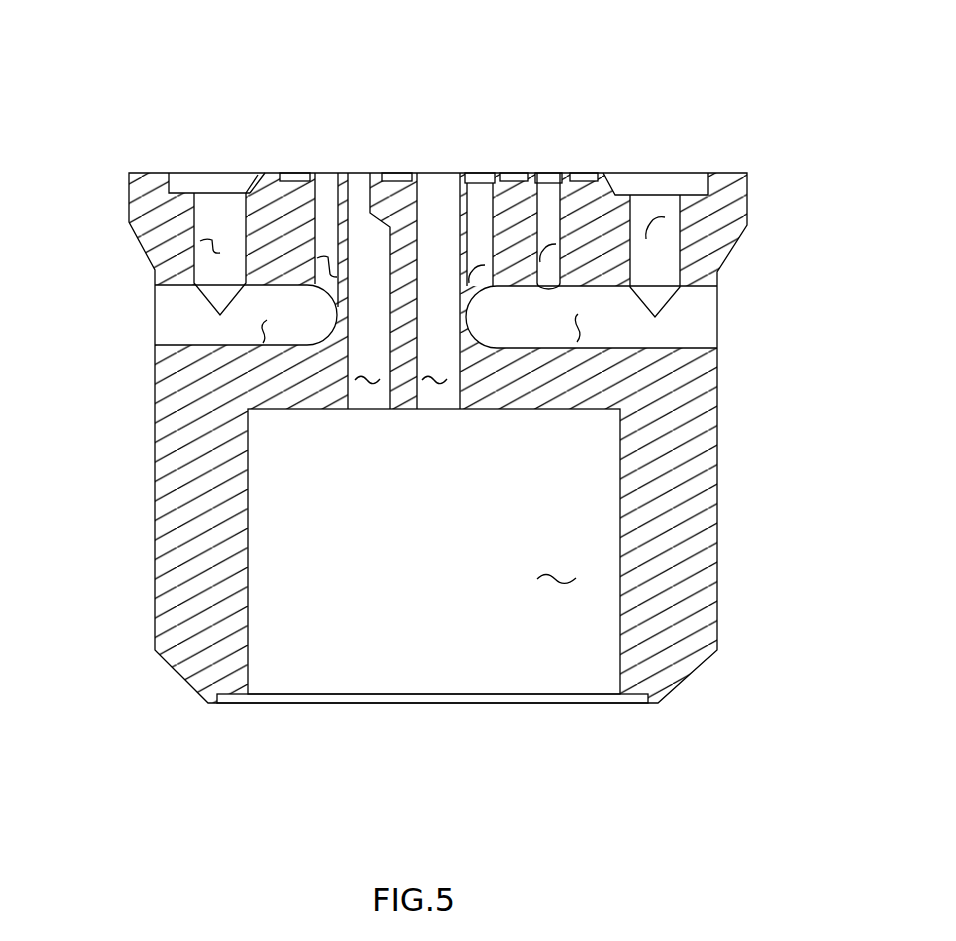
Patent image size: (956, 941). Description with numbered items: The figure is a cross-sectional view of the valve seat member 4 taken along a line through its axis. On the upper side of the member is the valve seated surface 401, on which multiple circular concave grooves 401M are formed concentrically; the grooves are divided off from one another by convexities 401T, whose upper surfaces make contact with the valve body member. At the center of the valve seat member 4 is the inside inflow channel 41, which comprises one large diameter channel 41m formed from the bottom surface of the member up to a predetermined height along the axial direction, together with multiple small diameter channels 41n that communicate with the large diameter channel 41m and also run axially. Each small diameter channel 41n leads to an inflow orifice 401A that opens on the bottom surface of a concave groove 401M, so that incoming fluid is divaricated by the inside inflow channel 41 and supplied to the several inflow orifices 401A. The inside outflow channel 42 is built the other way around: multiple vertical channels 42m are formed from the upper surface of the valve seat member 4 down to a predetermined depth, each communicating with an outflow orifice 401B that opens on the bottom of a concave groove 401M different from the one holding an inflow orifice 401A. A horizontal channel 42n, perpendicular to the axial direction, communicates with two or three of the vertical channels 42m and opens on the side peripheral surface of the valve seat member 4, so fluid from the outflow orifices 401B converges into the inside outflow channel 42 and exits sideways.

The valve seat member 4 is at (128, 70).
The valve seated surface 401 is at (153, 172).
The outflow orifice 401B is at (216, 191).
The concave groove 401M is at (282, 180).
The inflow orifice 401A is at (365, 172).
The convexity 401T is at (382, 173).
The inside outflow channel 42 is at (62, 277).
The vertical channel 42m is at (317, 258).
The horizontal channel 42n is at (263, 331).
The inside inflow channel 41 is at (587, 747).
The small diameter channel 41n is at (368, 383).
The large diameter channel 41m is at (555, 585).